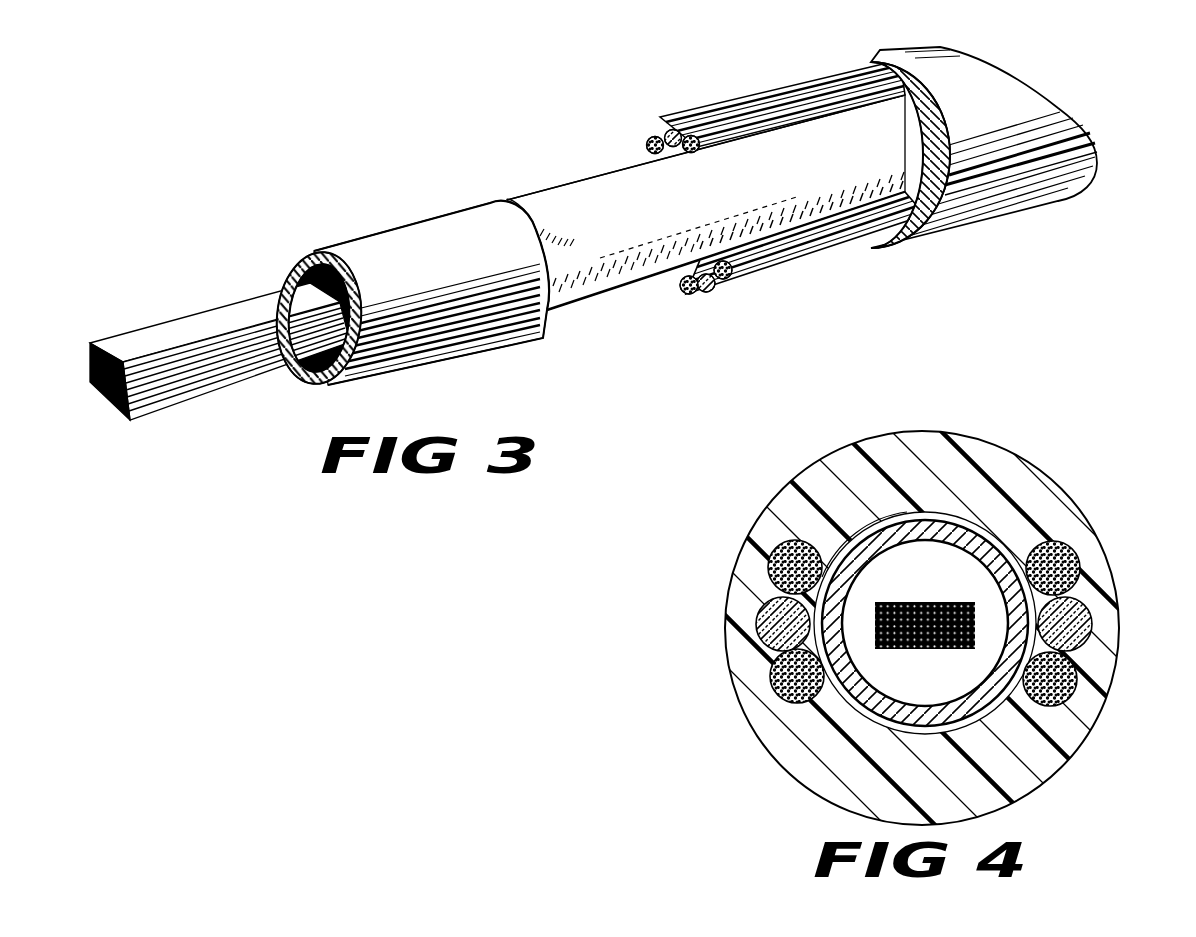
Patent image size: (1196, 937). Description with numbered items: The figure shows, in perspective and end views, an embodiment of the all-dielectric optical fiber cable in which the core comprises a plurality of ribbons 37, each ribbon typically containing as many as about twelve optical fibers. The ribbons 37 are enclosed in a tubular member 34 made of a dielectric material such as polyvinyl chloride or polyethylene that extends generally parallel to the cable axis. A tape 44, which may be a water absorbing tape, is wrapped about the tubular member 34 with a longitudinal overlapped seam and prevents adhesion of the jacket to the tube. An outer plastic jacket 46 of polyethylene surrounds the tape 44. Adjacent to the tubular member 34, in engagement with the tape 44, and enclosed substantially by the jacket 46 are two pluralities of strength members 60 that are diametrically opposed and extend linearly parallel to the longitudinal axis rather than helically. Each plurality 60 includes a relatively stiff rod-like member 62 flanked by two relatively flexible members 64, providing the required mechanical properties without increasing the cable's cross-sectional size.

In FIG. 3, the tubular member 34 is at (319, 308).
In FIG. 4, the tubular member 34 is at (889, 527).
In FIG. 3, the ribbon 37 is at (177, 335).
In FIG. 4, the ribbon 37 is at (940, 601).
In FIG. 3, the tape 44 is at (548, 193).
In FIG. 4, the tape 44 is at (970, 512).
In FIG. 3, the outer plastic jacket 46 is at (858, 68).
In FIG. 4, the outer plastic jacket 46 is at (985, 446).
In FIG. 3, the plurality of strength members 60 is at (778, 224).
In FIG. 3, the rod-like member 62 is at (693, 124).
In FIG. 4, the rod-like member 62 is at (757, 633).
In FIG. 3, the flexible member 64 is at (686, 153).
In FIG. 4, the flexible member 64 is at (770, 565).